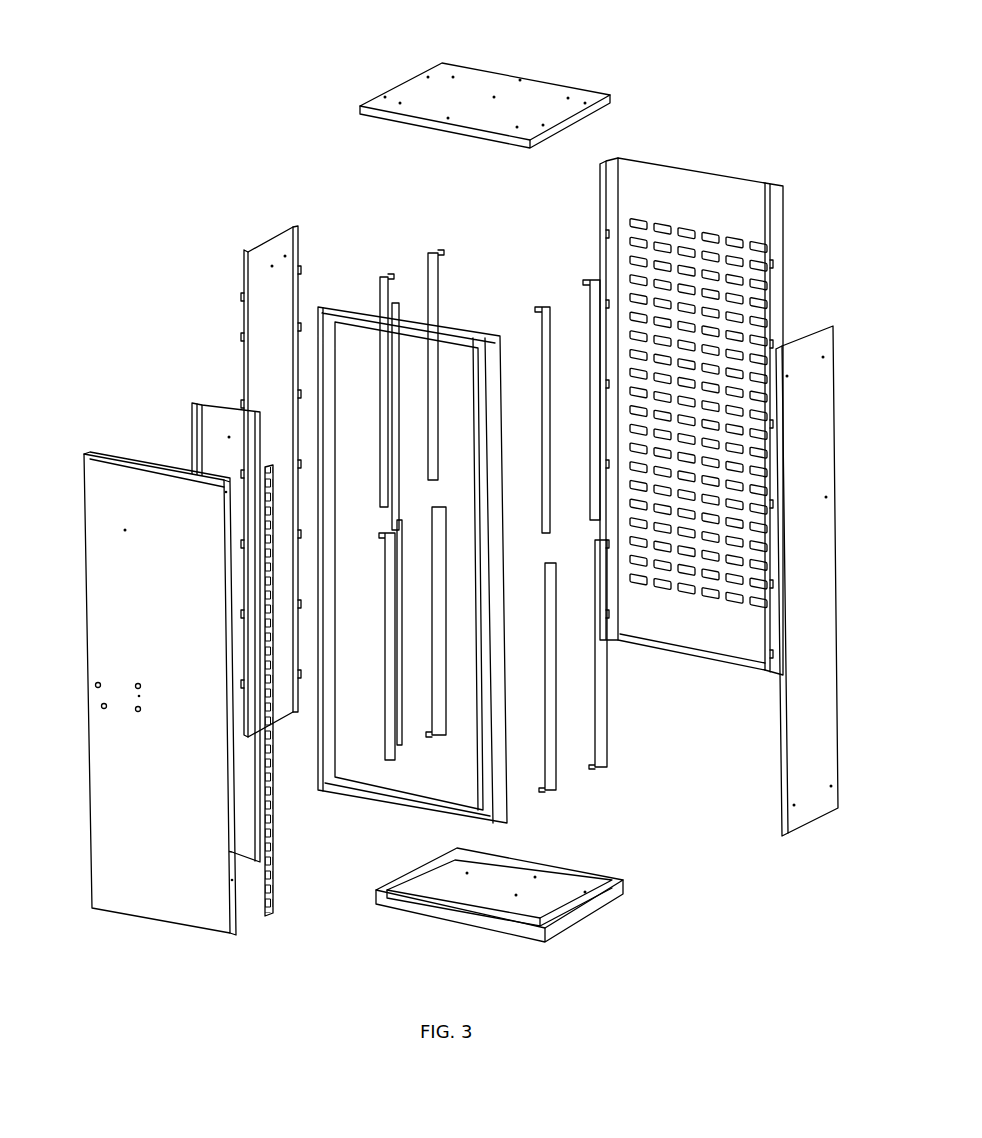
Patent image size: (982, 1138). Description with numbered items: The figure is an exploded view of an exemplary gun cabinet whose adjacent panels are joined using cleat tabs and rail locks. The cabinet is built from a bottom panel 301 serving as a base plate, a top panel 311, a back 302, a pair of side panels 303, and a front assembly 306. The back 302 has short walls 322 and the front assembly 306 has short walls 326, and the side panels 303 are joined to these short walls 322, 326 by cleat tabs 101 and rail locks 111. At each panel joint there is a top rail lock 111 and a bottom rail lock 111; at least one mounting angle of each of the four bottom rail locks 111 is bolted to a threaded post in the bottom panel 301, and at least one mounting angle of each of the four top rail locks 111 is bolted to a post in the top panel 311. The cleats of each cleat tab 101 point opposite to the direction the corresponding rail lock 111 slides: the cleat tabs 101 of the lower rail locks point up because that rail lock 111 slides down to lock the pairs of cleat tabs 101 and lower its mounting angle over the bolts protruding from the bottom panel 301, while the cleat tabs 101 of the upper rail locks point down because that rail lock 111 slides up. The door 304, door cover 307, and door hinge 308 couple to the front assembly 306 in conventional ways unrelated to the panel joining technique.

The cleat tab 101 is at (245, 337).
The rail lock 111 is at (425, 250).
The bottom panel 301 is at (516, 895).
The back 302 is at (663, 182).
The side panel 303 is at (272, 266).
The door 304 is at (125, 530).
The front assembly 306 is at (392, 806).
The door cover 307 is at (247, 408).
The door hinge 308 is at (273, 903).
The top panel 311 is at (494, 97).
The short wall 322 is at (612, 172).
The short wall 326 is at (494, 356).